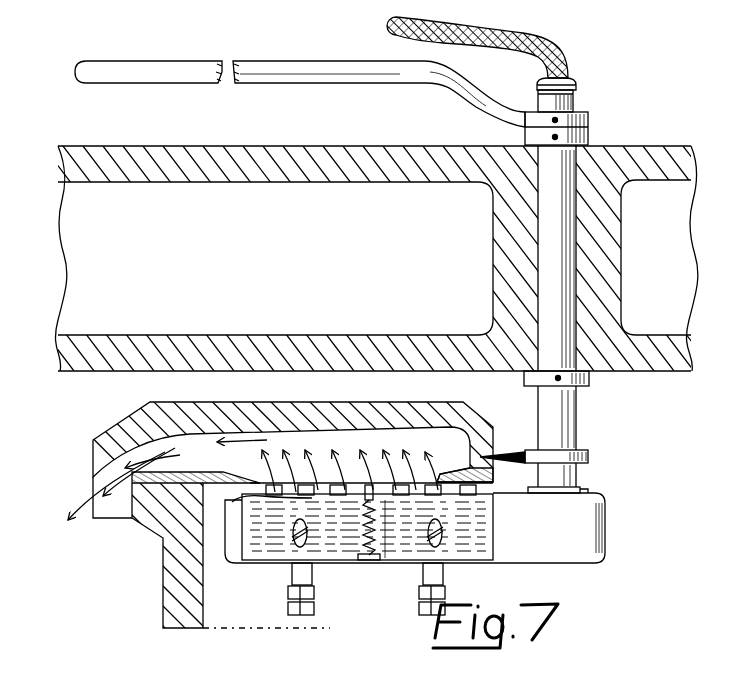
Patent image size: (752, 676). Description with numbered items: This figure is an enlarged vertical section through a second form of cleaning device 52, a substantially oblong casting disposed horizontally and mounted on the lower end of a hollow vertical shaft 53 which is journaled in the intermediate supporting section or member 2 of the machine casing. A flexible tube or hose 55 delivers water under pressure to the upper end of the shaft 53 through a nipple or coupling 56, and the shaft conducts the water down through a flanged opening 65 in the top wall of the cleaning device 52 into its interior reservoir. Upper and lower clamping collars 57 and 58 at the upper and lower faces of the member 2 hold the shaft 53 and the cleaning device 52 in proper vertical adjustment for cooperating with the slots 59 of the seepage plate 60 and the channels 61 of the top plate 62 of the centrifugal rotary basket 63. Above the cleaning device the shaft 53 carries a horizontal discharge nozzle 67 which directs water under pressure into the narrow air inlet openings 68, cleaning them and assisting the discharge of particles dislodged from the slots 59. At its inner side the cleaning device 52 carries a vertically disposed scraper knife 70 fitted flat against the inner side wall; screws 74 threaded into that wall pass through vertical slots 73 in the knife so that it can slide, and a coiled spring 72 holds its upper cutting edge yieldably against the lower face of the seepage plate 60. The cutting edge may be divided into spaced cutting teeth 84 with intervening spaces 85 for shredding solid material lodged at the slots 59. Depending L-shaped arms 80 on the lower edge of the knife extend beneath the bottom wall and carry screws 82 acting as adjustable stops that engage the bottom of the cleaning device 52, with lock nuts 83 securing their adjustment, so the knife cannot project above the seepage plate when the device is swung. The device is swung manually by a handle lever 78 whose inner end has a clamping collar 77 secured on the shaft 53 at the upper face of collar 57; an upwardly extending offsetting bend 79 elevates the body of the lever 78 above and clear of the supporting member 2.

The intermediate supporting section or member 2 is at (201, 150).
The cleaning device 52 is at (578, 535).
The hollow vertical shaft 53 is at (548, 233).
The flexible tube or hose 55 is at (511, 32).
The nipple or coupling 56 is at (576, 83).
The upper clamping collar 57 is at (590, 140).
The lower clamping collar 58 is at (590, 378).
The slots 59 is at (427, 482).
The seepage plate 60 is at (205, 455).
The channels 61 is at (385, 448).
The top plate 62 is at (441, 386).
The centrifugal rotary basket 63 is at (163, 580).
The flanged opening 65 is at (592, 492).
The discharge nozzle 67 is at (522, 450).
The narrow air inlet openings 68 is at (478, 457).
The scraper knife 70 is at (398, 529).
The coiled spring 72 is at (363, 530).
The vertical slots 73 is at (290, 538).
The screws 74 is at (445, 537).
The clamping collar 77 is at (590, 115).
The handle lever 78 is at (357, 74).
The offsetting bend 79 is at (483, 100).
The L-shaped arms 80 is at (292, 576).
The screws 82 is at (313, 610).
The lock nuts 83 is at (444, 594).
The cutting teeth 84 is at (492, 496).
The intervening spaces 85 is at (243, 498).